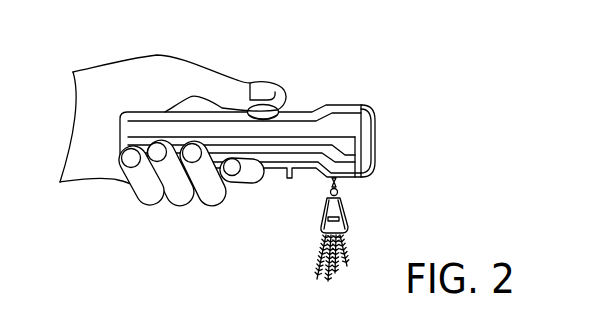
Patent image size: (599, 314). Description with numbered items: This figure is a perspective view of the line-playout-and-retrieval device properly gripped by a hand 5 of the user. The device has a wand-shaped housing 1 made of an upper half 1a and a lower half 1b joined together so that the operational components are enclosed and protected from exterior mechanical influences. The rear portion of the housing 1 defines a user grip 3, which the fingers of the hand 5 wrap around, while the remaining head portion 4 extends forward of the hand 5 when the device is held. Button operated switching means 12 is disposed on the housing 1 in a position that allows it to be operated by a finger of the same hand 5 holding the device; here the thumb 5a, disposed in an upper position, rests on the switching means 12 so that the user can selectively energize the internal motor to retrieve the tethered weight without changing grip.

The housing 1 is at (296, 141).
The upper half 1a is at (281, 91).
The lower half 1b is at (333, 161).
The user grip 3 is at (168, 118).
The head portion 4 is at (340, 110).
The hand 5 is at (128, 77).
The thumb 5a is at (241, 96).
The button operated switching means 12 is at (272, 119).